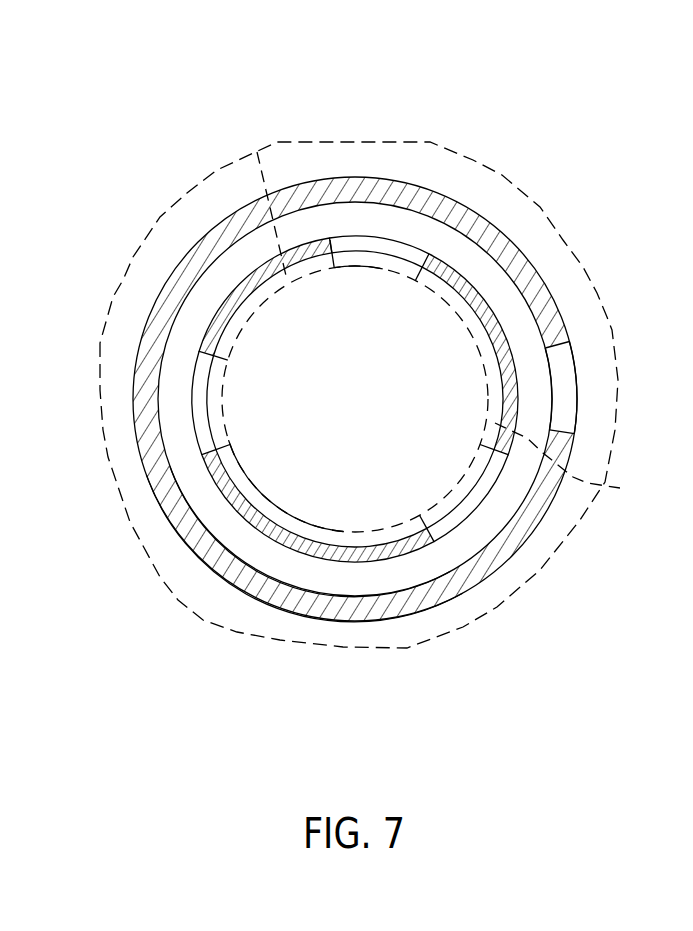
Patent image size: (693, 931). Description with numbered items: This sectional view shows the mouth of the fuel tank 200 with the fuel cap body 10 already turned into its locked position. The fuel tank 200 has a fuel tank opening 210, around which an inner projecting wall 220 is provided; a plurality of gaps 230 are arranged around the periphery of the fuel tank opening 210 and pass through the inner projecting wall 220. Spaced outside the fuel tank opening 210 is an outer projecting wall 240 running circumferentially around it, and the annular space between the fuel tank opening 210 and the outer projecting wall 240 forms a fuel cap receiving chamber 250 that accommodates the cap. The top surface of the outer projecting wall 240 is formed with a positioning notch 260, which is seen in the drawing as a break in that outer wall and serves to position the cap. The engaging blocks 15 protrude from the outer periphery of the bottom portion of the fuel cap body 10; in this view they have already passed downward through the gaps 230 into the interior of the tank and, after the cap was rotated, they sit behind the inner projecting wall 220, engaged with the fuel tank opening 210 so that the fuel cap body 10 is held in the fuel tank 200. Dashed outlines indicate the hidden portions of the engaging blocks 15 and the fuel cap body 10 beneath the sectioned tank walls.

The fuel tank 200 is at (485, 200).
The fuel tank opening 210 is at (490, 338).
The inner projecting wall 220 is at (220, 303).
The gaps 230 is at (203, 370).
The outer projecting wall 240 is at (342, 602).
The fuel cap receiving chamber 250 is at (237, 533).
The positioning notch 260 is at (572, 385).
The engaging blocks 15 is at (257, 152).
The fuel cap body 10 is at (333, 493).